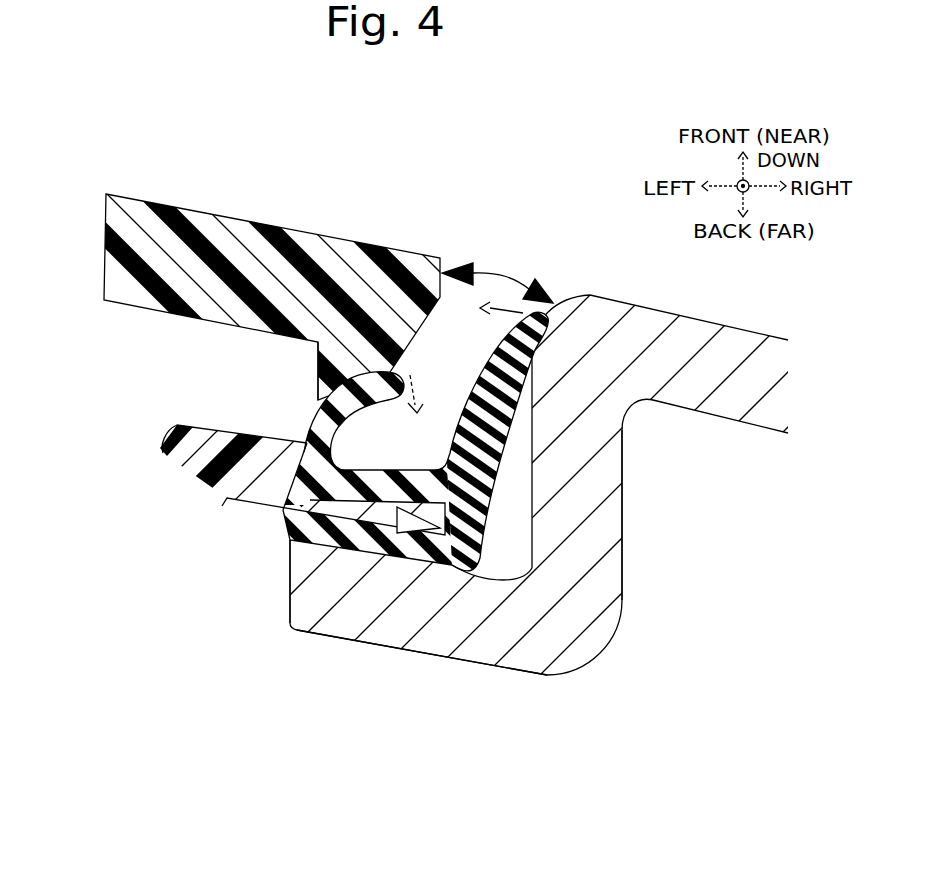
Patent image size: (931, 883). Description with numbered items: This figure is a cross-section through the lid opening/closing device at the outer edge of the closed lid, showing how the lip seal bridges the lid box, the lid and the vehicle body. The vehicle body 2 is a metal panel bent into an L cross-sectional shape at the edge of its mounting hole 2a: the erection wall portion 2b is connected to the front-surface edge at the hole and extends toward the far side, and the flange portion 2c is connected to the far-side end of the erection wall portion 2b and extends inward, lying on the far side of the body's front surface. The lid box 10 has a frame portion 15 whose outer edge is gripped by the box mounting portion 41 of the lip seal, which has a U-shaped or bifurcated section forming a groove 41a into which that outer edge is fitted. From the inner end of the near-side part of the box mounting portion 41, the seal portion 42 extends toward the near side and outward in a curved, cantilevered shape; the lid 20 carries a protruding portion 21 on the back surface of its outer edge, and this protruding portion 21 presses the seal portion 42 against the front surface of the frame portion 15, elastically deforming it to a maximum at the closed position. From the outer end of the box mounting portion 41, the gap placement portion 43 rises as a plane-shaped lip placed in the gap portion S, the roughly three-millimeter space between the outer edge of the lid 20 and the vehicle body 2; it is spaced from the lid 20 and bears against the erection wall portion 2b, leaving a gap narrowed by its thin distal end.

The vehicle body 2 is at (713, 424).
The mounting hole 2a is at (287, 599).
The erection wall portion 2b is at (603, 513).
The flange portion 2c is at (438, 632).
The lid box 10 is at (160, 432).
The frame portion 15 is at (287, 456).
The lid 20 is at (358, 238).
The protruding portion 21 is at (318, 384).
The box mounting portion 41 is at (290, 523).
The groove 41a is at (390, 553).
The seal portion 42 is at (323, 428).
The gap placement portion 43 is at (515, 346).
The gap portion S is at (480, 333).